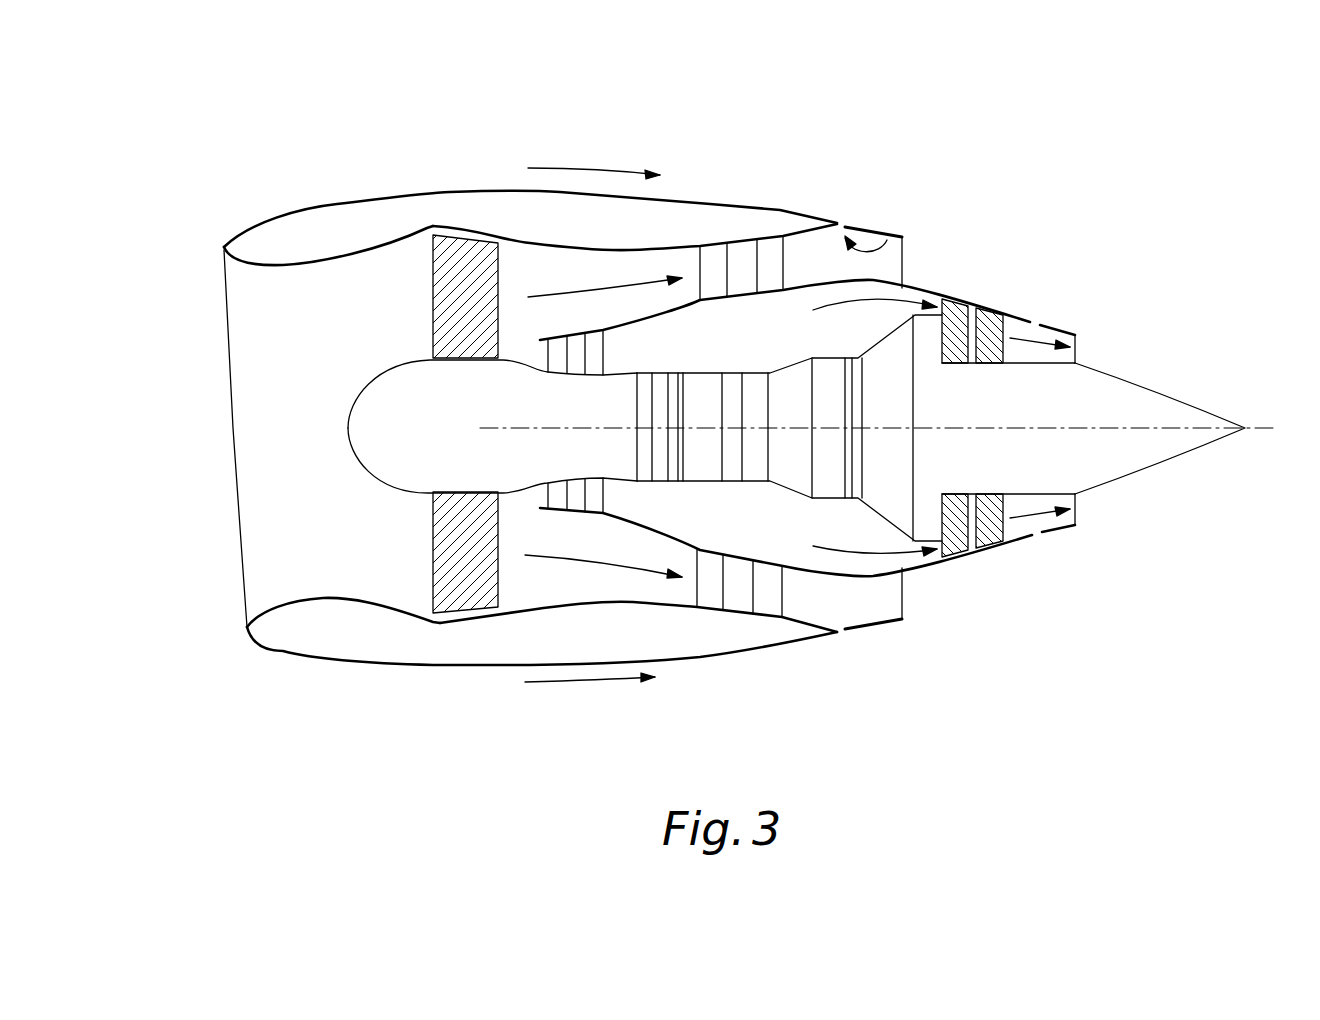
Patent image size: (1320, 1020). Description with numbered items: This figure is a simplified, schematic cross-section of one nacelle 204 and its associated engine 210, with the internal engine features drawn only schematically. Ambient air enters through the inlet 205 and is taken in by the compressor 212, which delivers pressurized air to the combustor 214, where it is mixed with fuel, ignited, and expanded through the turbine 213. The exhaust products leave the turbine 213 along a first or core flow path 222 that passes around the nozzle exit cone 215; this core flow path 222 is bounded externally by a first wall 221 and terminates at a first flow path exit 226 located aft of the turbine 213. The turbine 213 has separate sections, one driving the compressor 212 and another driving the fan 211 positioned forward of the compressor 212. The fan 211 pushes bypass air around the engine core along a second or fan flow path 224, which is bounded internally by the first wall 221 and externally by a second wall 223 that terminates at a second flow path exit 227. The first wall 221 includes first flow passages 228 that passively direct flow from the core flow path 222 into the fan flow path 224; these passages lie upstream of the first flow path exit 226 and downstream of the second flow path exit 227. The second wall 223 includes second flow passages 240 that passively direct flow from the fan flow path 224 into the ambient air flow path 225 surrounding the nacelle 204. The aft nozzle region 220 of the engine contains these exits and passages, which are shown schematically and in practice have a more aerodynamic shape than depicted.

The nacelle 204 is at (278, 188).
The inlet 205 is at (225, 513).
The engine 210 is at (527, 268).
The fan 211 is at (432, 287).
The compressor 212 is at (573, 520).
The turbine 213 is at (975, 565).
The combustor 214 is at (872, 522).
The nozzle exit cone 215 is at (1128, 478).
The exhaust nozzle section 220 is at (1073, 240).
The first wall 221 is at (875, 280).
The first flow path 222 is at (1003, 310).
The second wall 223 is at (813, 218).
The second flow path 224 is at (615, 285).
The ambient air flow path 225 is at (598, 170).
The first flow path exit 226 is at (1077, 363).
The second flow path exit 227 is at (902, 262).
The first flow passages 228 is at (1042, 318).
The second flow passages 240 is at (887, 232).